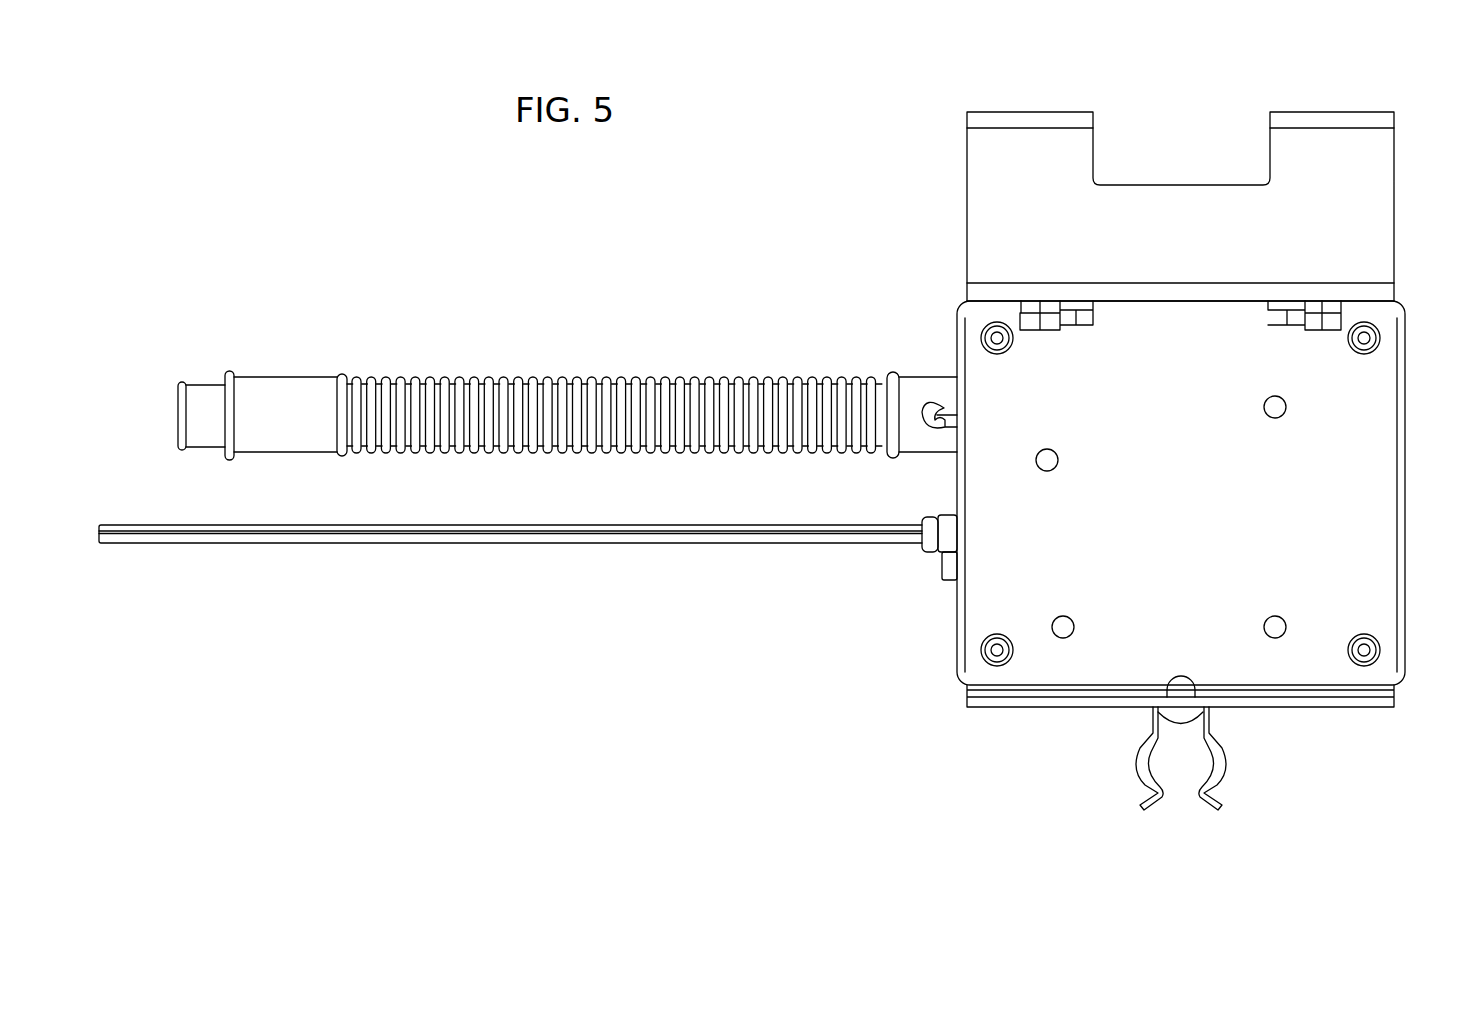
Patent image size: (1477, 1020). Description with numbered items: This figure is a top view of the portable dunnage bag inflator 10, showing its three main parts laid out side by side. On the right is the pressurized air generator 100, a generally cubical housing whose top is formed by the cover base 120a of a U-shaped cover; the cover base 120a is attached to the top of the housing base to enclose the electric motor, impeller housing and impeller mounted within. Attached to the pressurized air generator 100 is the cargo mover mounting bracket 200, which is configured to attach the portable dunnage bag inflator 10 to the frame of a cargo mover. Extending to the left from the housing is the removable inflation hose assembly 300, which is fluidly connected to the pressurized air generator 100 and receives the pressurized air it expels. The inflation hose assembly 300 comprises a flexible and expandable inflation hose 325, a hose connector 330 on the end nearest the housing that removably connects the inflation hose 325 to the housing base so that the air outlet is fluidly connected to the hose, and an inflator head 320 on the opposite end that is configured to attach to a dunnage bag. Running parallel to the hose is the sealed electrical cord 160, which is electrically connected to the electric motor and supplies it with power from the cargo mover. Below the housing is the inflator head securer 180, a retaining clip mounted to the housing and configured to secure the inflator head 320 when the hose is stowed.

The portable dunnage bag inflator 10 is at (387, 748).
The pressurized air generator 100 is at (1412, 448).
The cover base 120a is at (1197, 514).
The sealed electrical cord 160 is at (528, 545).
The inflator head securer 180 is at (1220, 805).
The cargo mover mounting bracket 200 is at (1342, 112).
The removable inflation hose assembly 300 is at (362, 292).
The inflator head 320 is at (231, 371).
The inflation hose 325 is at (586, 375).
The hose connector 330 is at (894, 372).